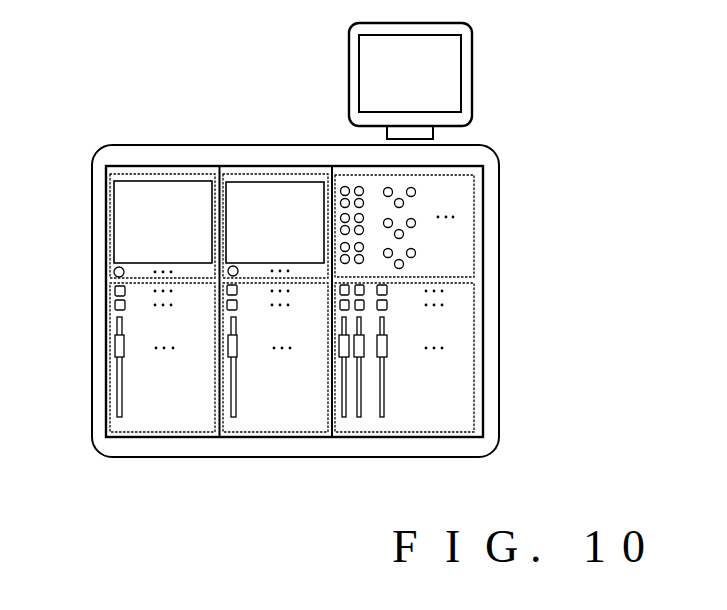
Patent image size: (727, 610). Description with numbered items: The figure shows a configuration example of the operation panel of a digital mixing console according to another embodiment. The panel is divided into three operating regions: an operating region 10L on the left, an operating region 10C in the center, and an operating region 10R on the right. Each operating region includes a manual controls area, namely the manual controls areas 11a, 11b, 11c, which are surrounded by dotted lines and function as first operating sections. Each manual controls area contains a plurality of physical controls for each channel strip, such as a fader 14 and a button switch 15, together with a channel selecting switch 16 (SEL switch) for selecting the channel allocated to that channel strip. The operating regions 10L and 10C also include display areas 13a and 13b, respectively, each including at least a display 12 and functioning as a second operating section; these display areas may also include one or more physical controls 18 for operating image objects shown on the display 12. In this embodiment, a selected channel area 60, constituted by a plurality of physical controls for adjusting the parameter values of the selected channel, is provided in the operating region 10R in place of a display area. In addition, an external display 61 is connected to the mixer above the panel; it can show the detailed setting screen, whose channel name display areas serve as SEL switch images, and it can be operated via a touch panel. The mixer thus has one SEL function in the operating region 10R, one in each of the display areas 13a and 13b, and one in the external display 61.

The operating region L 10L is at (120, 310).
The operating region C 10C is at (270, 310).
The operating region R 10R is at (448, 336).
The manual controls area 11a is at (105, 403).
The manual controls area 11b is at (245, 435).
The manual controls area 11c is at (465, 425).
The display 12 is at (125, 194).
The display area 13a is at (158, 175).
The display area 13b is at (233, 175).
The fader 14 is at (116, 350).
The button switch 15 is at (112, 306).
The channel selecting switch 16 is at (112, 291).
The physical control 18 is at (107, 276).
The selected channel area 60 is at (470, 208).
The external display 61 is at (472, 62).